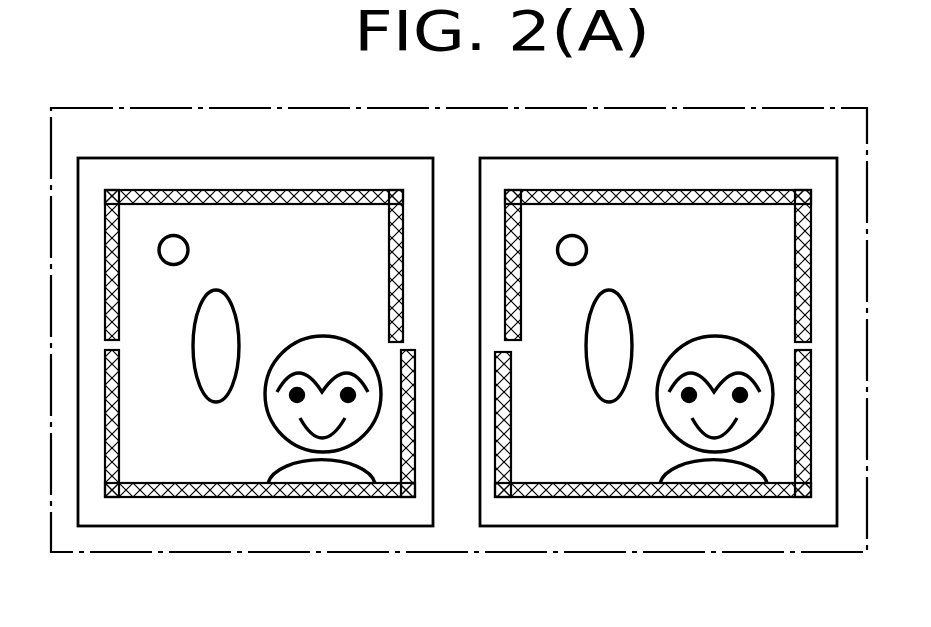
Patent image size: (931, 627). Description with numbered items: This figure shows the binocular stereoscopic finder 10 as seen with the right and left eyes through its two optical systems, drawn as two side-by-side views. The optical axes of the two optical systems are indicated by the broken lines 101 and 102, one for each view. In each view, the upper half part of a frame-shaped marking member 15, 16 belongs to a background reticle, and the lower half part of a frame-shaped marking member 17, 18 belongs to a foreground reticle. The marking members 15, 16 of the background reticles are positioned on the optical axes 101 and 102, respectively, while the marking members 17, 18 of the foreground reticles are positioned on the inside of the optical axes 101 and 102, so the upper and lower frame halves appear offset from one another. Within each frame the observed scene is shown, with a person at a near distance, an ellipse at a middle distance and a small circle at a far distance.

The binocular stereoscopic finder 10 is at (806, 109).
The optical axis of left optical system 101 is at (257, 167).
The optical axis of right optical system 102 is at (660, 167).
The upper half part of frame-shaped marking member 15 is at (340, 190).
The upper half part of frame-shaped marking member 16 is at (748, 190).
The lower half part of frame-shaped marking member 17 is at (210, 497).
The lower half part of frame-shaped marking member 18 is at (652, 497).